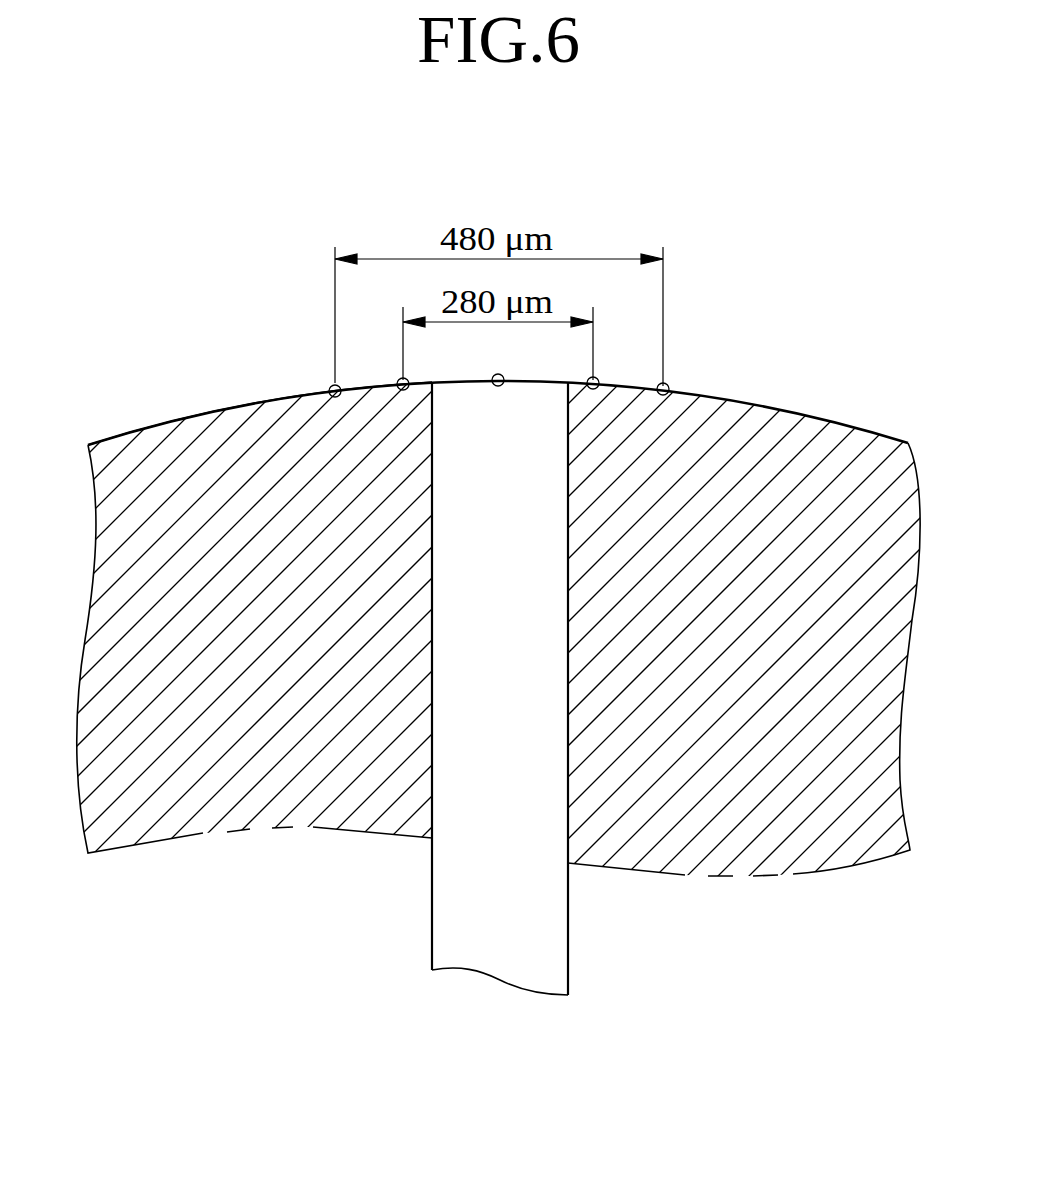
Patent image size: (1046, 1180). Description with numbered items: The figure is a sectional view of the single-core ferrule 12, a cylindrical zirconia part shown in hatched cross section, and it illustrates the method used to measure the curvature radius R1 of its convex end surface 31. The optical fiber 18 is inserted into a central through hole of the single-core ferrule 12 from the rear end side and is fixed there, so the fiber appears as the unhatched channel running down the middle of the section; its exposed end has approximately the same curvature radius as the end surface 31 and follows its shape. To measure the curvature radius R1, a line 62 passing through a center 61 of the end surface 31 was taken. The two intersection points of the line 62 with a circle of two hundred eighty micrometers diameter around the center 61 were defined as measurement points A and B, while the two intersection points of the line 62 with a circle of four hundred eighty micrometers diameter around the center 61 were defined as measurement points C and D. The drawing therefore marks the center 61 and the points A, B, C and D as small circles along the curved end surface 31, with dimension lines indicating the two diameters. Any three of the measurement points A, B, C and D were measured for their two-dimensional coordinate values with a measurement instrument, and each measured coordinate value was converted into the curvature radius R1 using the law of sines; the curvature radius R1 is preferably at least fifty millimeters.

The single-core ferrule 12 is at (741, 300).
The optical fiber 18 is at (455, 910).
The end surface 31 is at (808, 415).
The center 61 is at (500, 375).
The line 62 is at (190, 416).
The curvature radius R1 is at (148, 425).
The measurement point A is at (399, 380).
The measurement point B is at (597, 378).
The measurement point C is at (330, 387).
The measurement point D is at (667, 384).